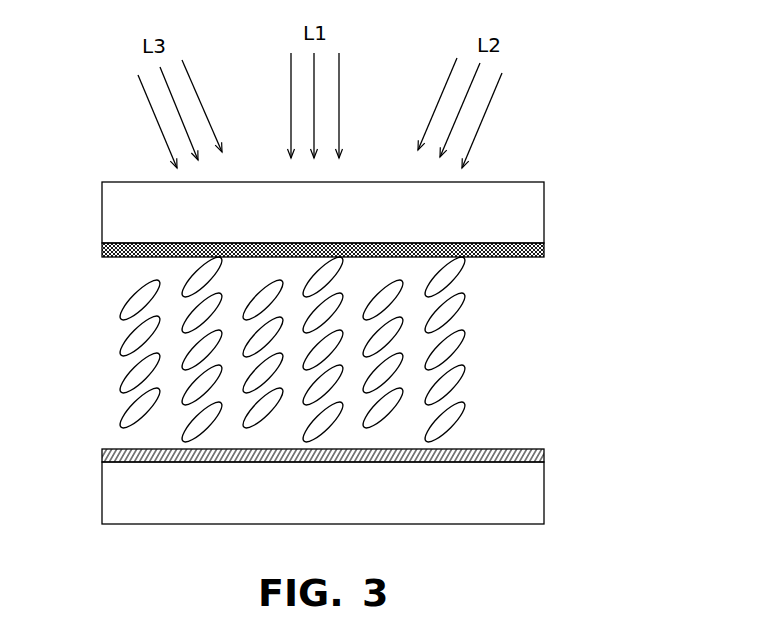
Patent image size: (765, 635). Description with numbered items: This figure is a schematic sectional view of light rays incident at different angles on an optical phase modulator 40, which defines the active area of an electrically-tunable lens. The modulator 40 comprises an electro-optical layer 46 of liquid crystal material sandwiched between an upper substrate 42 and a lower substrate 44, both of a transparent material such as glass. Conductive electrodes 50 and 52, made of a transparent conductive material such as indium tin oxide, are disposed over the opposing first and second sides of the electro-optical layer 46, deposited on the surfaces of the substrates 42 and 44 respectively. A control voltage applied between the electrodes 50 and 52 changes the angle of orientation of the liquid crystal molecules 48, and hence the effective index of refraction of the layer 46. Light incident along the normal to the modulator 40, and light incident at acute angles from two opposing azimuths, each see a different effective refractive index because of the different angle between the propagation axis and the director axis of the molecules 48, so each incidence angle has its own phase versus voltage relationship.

The optical phase modulator 40 is at (600, 142).
The upper substrate 42 is at (520, 220).
The lower substrate 44 is at (523, 493).
The electro-optical layer 46 is at (320, 349).
The liquid crystal molecules 48 is at (126, 302).
The conductive electrode 50 is at (102, 251).
The conductive electrode 52 is at (102, 451).